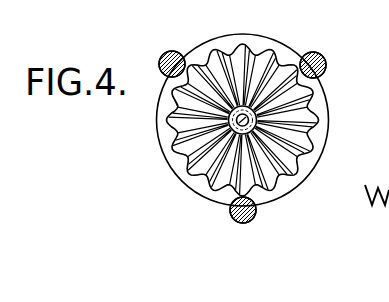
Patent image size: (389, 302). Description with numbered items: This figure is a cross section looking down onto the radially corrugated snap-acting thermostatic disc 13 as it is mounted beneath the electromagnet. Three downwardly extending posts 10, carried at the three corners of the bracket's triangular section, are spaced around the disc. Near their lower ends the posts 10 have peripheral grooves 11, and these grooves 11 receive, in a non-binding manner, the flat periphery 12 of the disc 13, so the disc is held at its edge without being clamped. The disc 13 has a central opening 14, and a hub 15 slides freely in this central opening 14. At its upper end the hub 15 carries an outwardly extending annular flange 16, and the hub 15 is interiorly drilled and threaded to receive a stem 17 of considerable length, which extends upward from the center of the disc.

The posts 10 is at (172, 51).
The peripheral grooves 11 is at (162, 58).
The flat periphery 12 is at (235, 42).
The radially corrugated snap-acting thermostatic disc 13 is at (305, 121).
The central opening 14 is at (168, 162).
The hub 15 is at (199, 184).
The annular flange 16 is at (289, 167).
The stem 17 is at (216, 56).